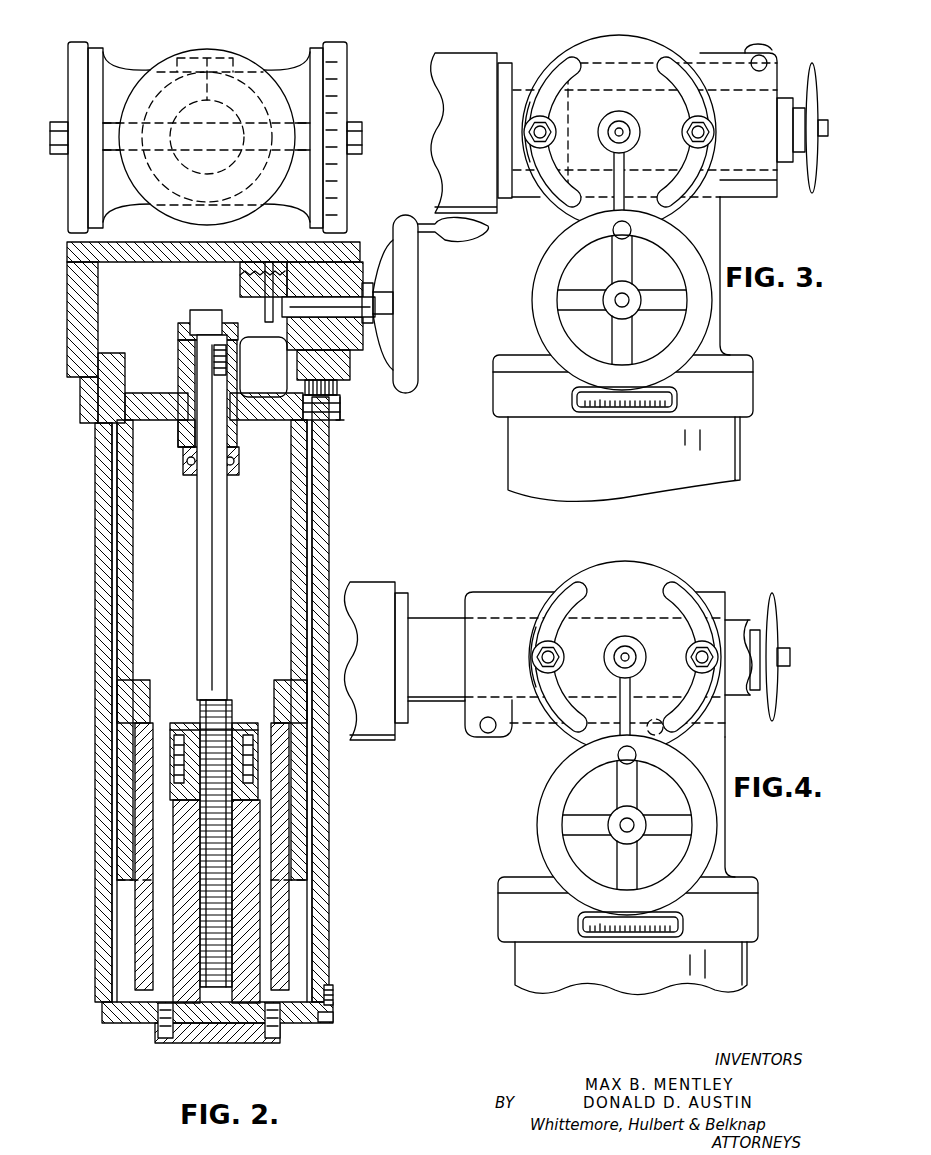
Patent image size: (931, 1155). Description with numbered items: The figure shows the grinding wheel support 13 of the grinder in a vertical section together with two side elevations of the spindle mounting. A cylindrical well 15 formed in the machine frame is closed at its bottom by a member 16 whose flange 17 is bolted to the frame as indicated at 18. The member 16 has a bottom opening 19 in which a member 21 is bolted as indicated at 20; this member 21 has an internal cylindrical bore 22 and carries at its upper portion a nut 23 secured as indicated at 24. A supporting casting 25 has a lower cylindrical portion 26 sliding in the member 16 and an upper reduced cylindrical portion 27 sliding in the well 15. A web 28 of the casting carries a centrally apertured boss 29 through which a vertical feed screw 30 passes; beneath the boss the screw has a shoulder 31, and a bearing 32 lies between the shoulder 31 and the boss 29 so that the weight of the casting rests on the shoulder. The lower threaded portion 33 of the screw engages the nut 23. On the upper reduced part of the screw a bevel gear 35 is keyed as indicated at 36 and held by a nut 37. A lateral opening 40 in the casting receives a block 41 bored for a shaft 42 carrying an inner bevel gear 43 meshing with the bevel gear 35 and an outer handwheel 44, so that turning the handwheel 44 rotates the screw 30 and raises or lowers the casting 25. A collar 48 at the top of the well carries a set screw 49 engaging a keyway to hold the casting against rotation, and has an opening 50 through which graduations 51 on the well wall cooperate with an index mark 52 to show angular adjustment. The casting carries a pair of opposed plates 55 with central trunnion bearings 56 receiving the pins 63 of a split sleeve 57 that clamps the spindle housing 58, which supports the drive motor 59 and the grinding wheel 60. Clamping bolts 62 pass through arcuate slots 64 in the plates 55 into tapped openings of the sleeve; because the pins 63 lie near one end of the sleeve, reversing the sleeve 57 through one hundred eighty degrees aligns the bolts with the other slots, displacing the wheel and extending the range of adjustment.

In FIG. 2, the grinding wheel support 13 is at (348, 187).
In FIG. 3, the grinding wheel support 13 is at (724, 338).
In FIG. 4, the grinding wheel support 13 is at (726, 857).
In FIG. 2, the cylindrical recess or well 15 is at (322, 530).
In FIG. 3, the cylindrical recess or well 15 is at (512, 497).
In FIG. 4, the cylindrical recess or well 15 is at (520, 968).
In FIG. 2, the bottom closure member 16 is at (310, 915).
In FIG. 2, the flange 17 is at (334, 1003).
In FIG. 2, the bolted securement 18 is at (325, 1020).
In FIG. 2, the opening 19 is at (165, 1035).
In FIG. 2, the bolted securement 20 is at (275, 1035).
In FIG. 2, the bored member 21 is at (230, 1043).
In FIG. 2, the internal cylindrical bore 22 is at (230, 845).
In FIG. 2, the nut 23 is at (192, 720).
In FIG. 2, the bolted securement 24 is at (175, 732).
In FIG. 2, the supporting casting 25 is at (80, 365).
In FIG. 2, the lower cylindrical portion 26 is at (285, 850).
In FIG. 2, the upper reduced cylindrical portion 27 is at (298, 550).
In FIG. 2, the web 28 is at (255, 412).
In FIG. 2, the centrally apertured boss 29 is at (243, 440).
In FIG. 2, the vertical feed screw 30 is at (210, 575).
In FIG. 2, the shoulder 31 is at (210, 470).
In FIG. 2, the bearing 32 is at (235, 465).
In FIG. 2, the threaded portion 33 is at (218, 943).
In FIG. 2, the bevel gear 35 is at (172, 338).
In FIG. 2, the key 36 is at (226, 360).
In FIG. 2, the nut 37 is at (193, 322).
In FIG. 2, the lateral opening 40 is at (330, 350).
In FIG. 2, the block 41 is at (340, 300).
In FIG. 2, the shaft 42 is at (440, 222).
In FIG. 2, the bevel gear 43 is at (232, 285).
In FIG. 2, the handwheel 44 is at (410, 300).
In FIG. 3, the handwheel 44 is at (700, 316).
In FIG. 4, the handwheel 44 is at (545, 820).
In FIG. 2, the collar 48 is at (332, 408).
In FIG. 3, the collar 48 is at (752, 393).
In FIG. 4, the collar 48 is at (760, 920).
In FIG. 2, the set screw 49 is at (320, 393).
In FIG. 2, the opening 50 is at (340, 415).
In FIG. 3, the opening 50 is at (668, 410).
In FIG. 4, the opening 50 is at (665, 934).
In FIG. 3, the graduations 51 is at (600, 410).
In FIG. 4, the graduations 51 is at (582, 934).
In FIG. 3, the index mark 52 is at (622, 410).
In FIG. 4, the index mark 52 is at (620, 934).
In FIG. 2, the opposed plates 55 is at (335, 42).
In FIG. 3, the opposed plates 55 is at (655, 55).
In FIG. 4, the opposed plates 55 is at (625, 657).
In FIG. 2, the trunnion bearings 56 is at (70, 110).
In FIG. 3, the trunnion bearings 56 is at (618, 118).
In FIG. 4, the trunnion bearings 56 is at (595, 676).
In FIG. 2, the split sleeve 57 is at (262, 72).
In FIG. 3, the split sleeve 57 is at (775, 198).
In FIG. 4, the split sleeve 57 is at (526, 722).
In FIG. 3, the spindle housing 58 is at (520, 95).
In FIG. 4, the spindle housing 58 is at (438, 635).
In FIG. 2, the drive motor 59 is at (158, 70).
In FIG. 3, the drive motor 59 is at (466, 62).
In FIG. 4, the drive motor 59 is at (393, 593).
In FIG. 3, the grinding wheel 60 is at (810, 192).
In FIG. 4, the grinding wheel 60 is at (777, 612).
In FIG. 3, the clamping bolts 62 is at (526, 133).
In FIG. 4, the clamping bolts 62 is at (532, 657).
In FIG. 3, the pins 63 is at (626, 140).
In FIG. 4, the pins 63 is at (630, 648).
In FIG. 3, the arcuate slots 64 is at (688, 75).
In FIG. 4, the arcuate slots 64 is at (558, 612).